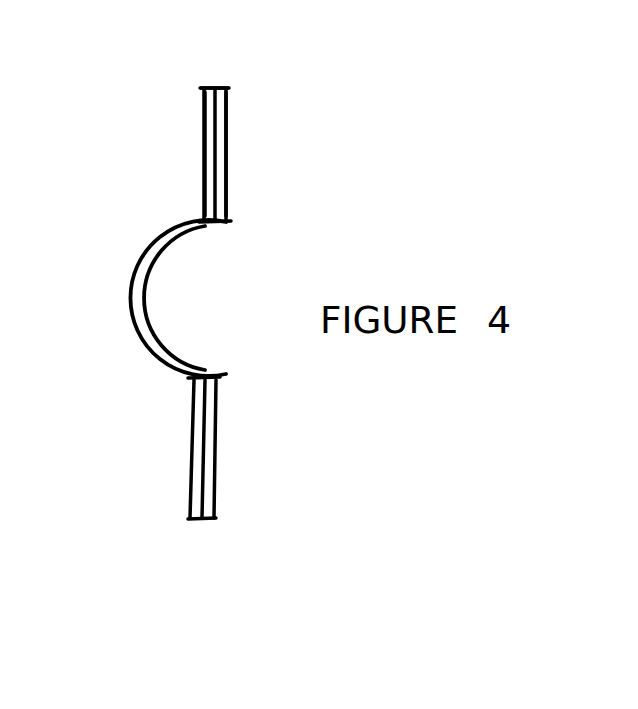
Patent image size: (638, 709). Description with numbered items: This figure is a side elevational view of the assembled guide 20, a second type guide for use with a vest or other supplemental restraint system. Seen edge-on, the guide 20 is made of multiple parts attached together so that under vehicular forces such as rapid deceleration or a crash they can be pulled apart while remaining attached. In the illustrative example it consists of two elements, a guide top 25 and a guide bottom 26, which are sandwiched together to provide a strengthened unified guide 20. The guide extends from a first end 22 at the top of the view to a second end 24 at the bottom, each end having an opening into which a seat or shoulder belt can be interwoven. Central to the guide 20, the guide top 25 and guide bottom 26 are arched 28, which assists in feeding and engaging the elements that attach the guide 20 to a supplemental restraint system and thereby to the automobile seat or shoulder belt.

The guide 20 is at (207, 130).
The first end 22 is at (223, 78).
The second end 24 is at (193, 533).
The guide top 25 is at (203, 93).
The guide bottom 26 is at (230, 91).
The arched portion 28 is at (155, 302).